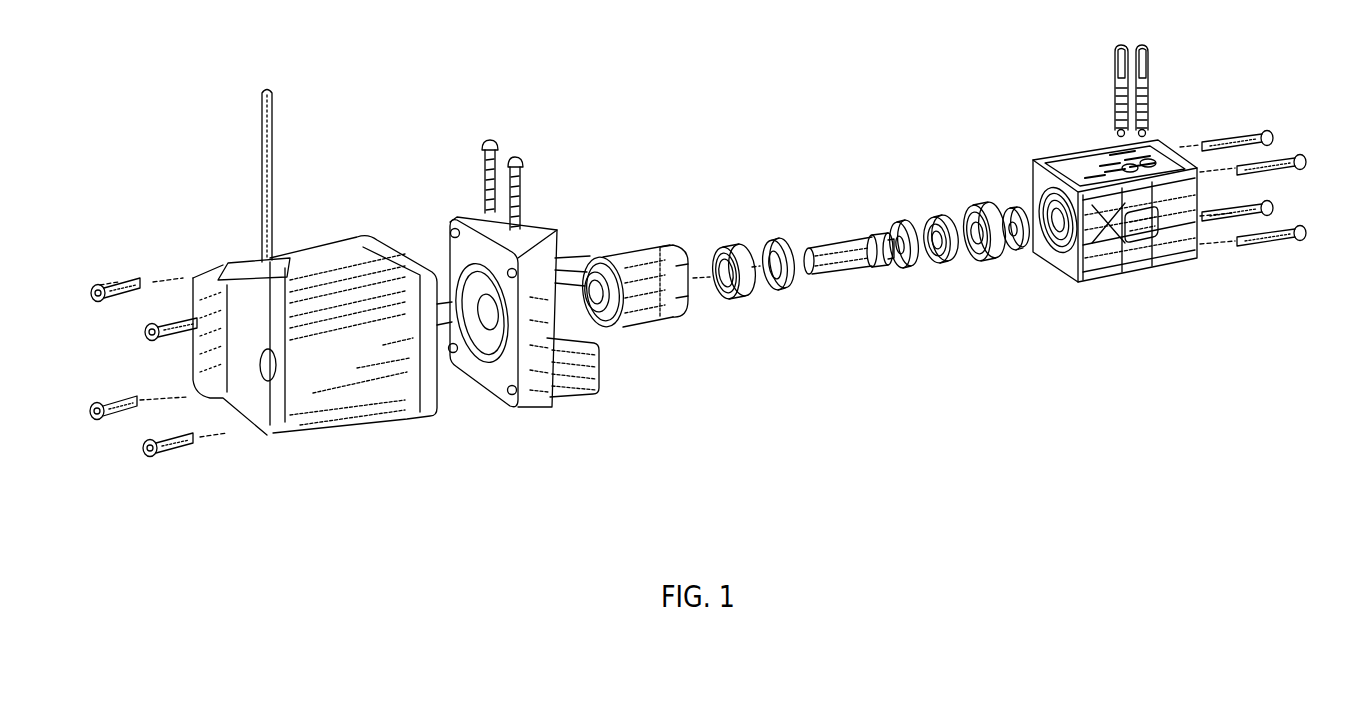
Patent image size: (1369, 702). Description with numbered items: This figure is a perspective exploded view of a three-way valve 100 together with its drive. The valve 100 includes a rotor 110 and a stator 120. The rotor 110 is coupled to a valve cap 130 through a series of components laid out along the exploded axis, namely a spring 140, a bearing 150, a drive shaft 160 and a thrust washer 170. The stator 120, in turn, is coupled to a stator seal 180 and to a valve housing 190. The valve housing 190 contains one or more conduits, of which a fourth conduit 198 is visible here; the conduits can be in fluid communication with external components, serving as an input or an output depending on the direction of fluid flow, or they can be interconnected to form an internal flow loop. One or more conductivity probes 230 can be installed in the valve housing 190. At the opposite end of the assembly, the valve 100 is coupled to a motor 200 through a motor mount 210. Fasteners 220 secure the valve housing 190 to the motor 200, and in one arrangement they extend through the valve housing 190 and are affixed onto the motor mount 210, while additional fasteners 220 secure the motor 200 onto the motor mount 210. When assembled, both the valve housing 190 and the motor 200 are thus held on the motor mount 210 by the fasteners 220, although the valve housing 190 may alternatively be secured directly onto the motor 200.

The valve 100 is at (1156, 26).
The rotor 110 is at (935, 263).
The stator 120 is at (988, 260).
The valve cap 130 is at (638, 317).
The spring 140 is at (731, 298).
The bearing 150 is at (778, 292).
The drive shaft 160 is at (847, 257).
The thrust washer 170 is at (902, 268).
The stator seal 180 is at (1023, 252).
The valve housing 190 is at (1158, 263).
The fourth conduit 198 is at (1158, 208).
The motor 200 is at (333, 405).
The motor mount 210 is at (533, 400).
The fasteners 220 is at (145, 441).
The conductivity probes 230 is at (1147, 71).